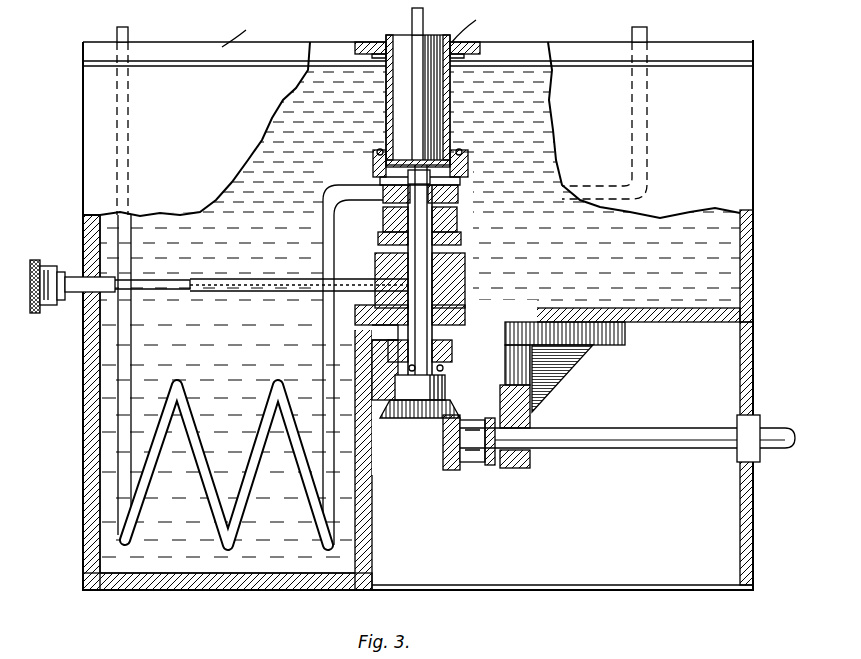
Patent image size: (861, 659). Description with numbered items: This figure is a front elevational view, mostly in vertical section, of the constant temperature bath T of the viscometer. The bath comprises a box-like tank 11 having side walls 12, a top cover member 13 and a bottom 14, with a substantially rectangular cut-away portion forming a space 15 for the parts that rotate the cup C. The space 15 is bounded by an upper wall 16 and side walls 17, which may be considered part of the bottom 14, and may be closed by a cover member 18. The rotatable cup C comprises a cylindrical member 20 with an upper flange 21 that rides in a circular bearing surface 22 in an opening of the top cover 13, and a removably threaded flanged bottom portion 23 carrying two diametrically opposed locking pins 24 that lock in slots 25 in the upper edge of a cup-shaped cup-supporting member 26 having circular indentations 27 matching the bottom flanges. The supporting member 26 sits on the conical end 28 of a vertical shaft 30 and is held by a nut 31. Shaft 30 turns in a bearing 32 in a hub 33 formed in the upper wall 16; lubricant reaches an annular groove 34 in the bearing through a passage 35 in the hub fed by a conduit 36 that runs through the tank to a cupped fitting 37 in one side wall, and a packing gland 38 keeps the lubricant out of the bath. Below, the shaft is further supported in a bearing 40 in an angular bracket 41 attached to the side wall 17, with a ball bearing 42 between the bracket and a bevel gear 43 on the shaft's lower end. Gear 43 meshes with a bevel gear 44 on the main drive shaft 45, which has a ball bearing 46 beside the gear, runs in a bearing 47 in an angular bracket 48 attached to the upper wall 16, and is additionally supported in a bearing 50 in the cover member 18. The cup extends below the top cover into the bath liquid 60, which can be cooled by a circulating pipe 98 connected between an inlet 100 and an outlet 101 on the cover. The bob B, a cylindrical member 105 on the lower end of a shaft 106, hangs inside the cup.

The tank 11 is at (78, 112).
The side walls 12 is at (83, 232).
The top surface or cover member 13 is at (176, 48).
The bottom 14 is at (230, 585).
The space 15 is at (705, 362).
The upper wall 16 is at (596, 308).
The side walls 17 is at (372, 508).
The cover member 18 is at (755, 384).
The cylindrical member 20 is at (460, 72).
The flange 21 is at (362, 42).
The bearing surface 22 is at (480, 42).
The flanged bottom portion 23 is at (468, 158).
The locking pins 24 is at (373, 160).
The slots 25 is at (378, 150).
The cup-supporting member 26 is at (380, 165).
The circular indentations 27 is at (405, 128).
The conical-shaped end 28 is at (460, 195).
The shaft 30 is at (465, 260).
The nut 31 is at (432, 176).
The bearing 32 is at (435, 298).
The hub 33 is at (466, 278).
The annular groove 34 is at (378, 245).
The passage 35 is at (398, 300).
The tube or conduit 36 is at (262, 279).
The cupped fitting 37 is at (72, 305).
The packing gland 38 is at (383, 218).
The bearing 40 is at (453, 344).
The angular bracket 41 is at (393, 420).
The ball bearing 42 is at (445, 368).
The bevel gear 43 is at (446, 386).
The bevel gear 44 is at (472, 468).
The main drive shaft 45 is at (628, 450).
The ball bearing 46 is at (492, 466).
The bearing 47 is at (535, 458).
The angular supporting bracket 48 is at (606, 350).
The bearing 50 is at (738, 445).
The bath liquid 60 is at (520, 78).
The cooling medium circulating pipe 98 is at (118, 370).
The inlet 100 is at (116, 32).
The outlet 101 is at (645, 32).
The cylindrical member 105 is at (460, 22).
The shaft 106 is at (411, 13).